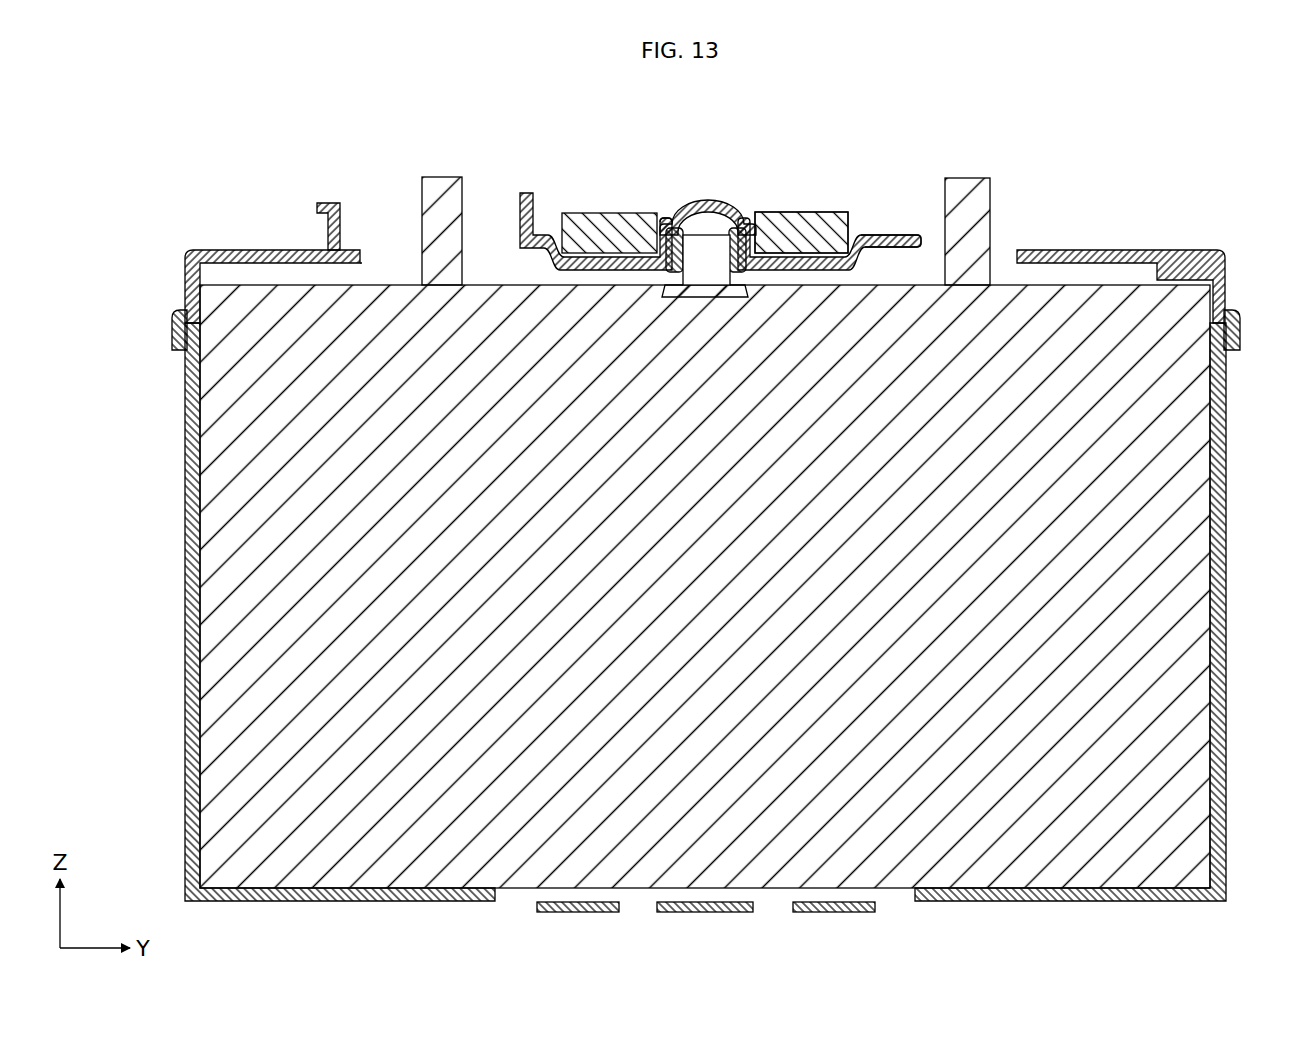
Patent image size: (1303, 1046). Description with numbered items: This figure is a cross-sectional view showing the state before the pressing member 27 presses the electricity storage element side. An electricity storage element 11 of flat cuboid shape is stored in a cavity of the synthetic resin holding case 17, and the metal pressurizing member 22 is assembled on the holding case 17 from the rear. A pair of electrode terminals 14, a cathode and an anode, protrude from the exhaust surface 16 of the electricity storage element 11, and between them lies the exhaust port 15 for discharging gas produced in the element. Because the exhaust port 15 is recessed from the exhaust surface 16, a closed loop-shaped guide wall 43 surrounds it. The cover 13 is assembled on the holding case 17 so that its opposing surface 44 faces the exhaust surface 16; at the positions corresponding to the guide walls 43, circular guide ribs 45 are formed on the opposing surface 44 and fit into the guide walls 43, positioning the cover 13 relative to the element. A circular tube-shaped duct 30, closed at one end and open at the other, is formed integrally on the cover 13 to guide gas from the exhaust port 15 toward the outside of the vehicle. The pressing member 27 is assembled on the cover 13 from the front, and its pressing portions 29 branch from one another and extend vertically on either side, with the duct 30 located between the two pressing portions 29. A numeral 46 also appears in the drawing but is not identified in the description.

The electricity storage element 11 is at (1188, 403).
The cover 13 is at (1181, 266).
The electrode terminal 14 is at (440, 188).
The exhaust port 15 is at (705, 290).
The exhaust surface 16 is at (510, 285).
The holding case 17 is at (1218, 475).
The pressurizing member 22 is at (702, 911).
The pressing member 27 is at (837, 206).
The pressing portion 29 is at (584, 228).
The duct 30 is at (707, 200).
The guide wall 43 is at (677, 244).
The opposing surface 44 is at (868, 262).
The guide rib 45 is at (642, 272).
The bent finger 46 is at (669, 240).